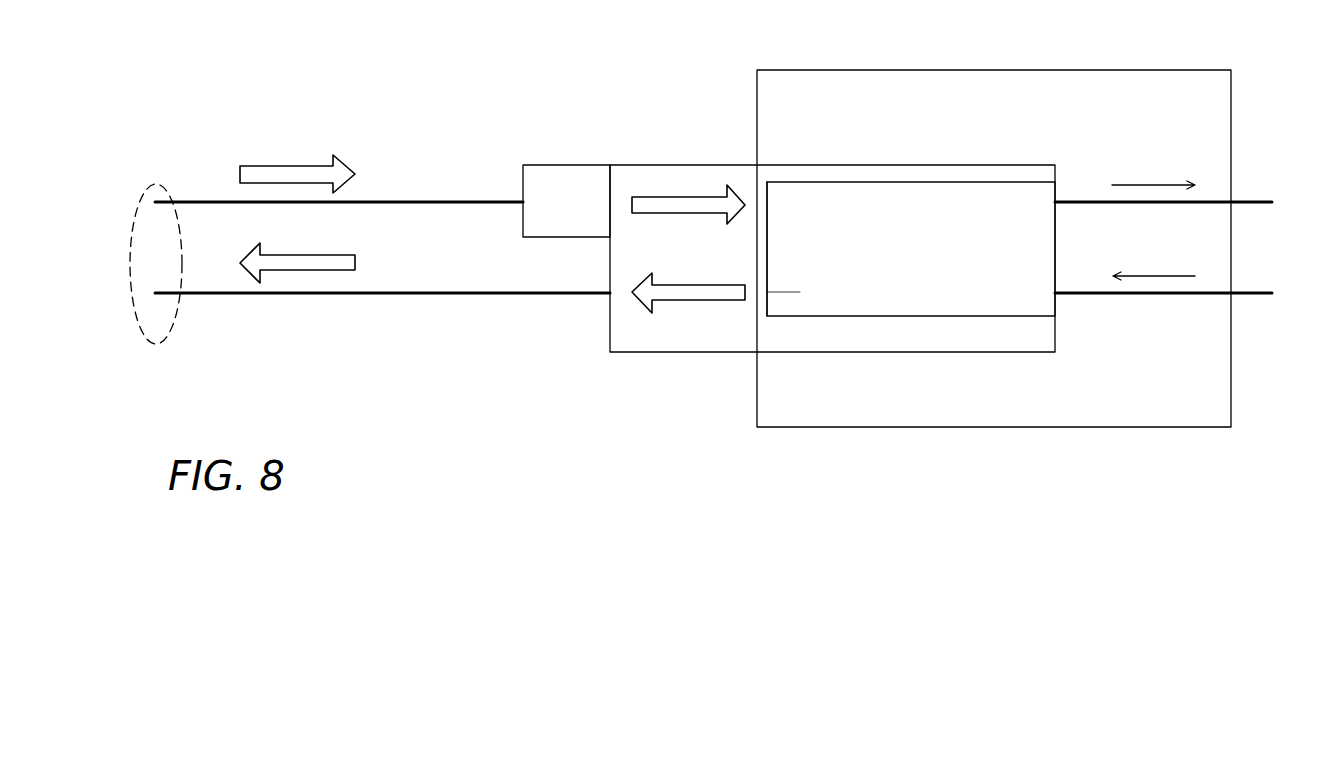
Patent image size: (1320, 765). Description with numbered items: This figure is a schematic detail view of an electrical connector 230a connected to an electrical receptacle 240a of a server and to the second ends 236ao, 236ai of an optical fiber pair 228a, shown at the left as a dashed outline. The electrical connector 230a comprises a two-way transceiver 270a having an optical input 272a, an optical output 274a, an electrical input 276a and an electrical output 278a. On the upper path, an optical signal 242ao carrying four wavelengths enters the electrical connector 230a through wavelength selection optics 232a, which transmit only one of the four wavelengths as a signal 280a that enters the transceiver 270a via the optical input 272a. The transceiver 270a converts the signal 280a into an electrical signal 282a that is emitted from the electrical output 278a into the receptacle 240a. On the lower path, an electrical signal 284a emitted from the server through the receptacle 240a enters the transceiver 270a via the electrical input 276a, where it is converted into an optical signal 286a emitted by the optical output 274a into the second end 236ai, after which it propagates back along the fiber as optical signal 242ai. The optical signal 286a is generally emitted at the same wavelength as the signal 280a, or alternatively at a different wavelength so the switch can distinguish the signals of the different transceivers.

The optical fiber pair 228a is at (170, 200).
The second end of outgoing fiber 236ao is at (437, 200).
The second end of incoming fiber 236ai is at (430, 300).
The optical signal 242ao is at (310, 165).
The optical signal 242ai is at (285, 272).
The wavelength selection optics 232a is at (570, 165).
The electrical connector 230a is at (685, 352).
The electrical receptacle 240a is at (985, 70).
The two-way transceiver 270a is at (925, 182).
The signal 280a is at (700, 195).
The optical signal 286a is at (668, 303).
The optical input 272a is at (768, 204).
The optical output 274a is at (768, 291).
The electrical output 278a is at (1057, 202).
The electrical input 276a is at (1057, 294).
The electrical signal 282a is at (1158, 183).
The electrical signal 284a is at (1162, 272).